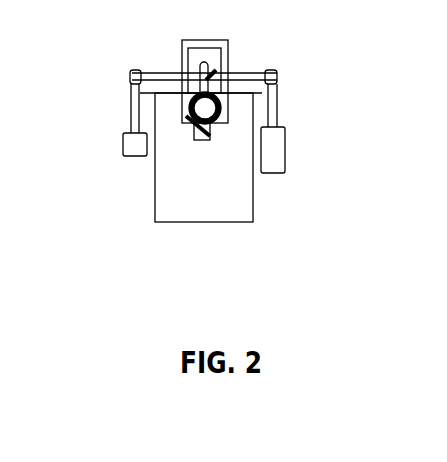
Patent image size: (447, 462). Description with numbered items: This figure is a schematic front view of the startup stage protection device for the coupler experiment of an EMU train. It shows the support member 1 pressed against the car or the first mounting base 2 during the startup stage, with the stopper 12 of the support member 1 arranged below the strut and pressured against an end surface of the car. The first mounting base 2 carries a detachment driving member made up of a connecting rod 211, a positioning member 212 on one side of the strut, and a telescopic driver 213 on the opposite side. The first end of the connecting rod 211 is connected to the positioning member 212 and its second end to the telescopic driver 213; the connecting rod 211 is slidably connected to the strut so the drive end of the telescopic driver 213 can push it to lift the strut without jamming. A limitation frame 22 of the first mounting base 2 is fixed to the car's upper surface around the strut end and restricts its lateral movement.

The support member 1 is at (212, 122).
The first mounting base 2 is at (212, 78).
The stopper 12 is at (202, 138).
The limitation frame 22 is at (186, 114).
The connecting rod 211 is at (263, 73).
The positioning member 212 is at (135, 145).
The telescopic driver 213 is at (272, 155).